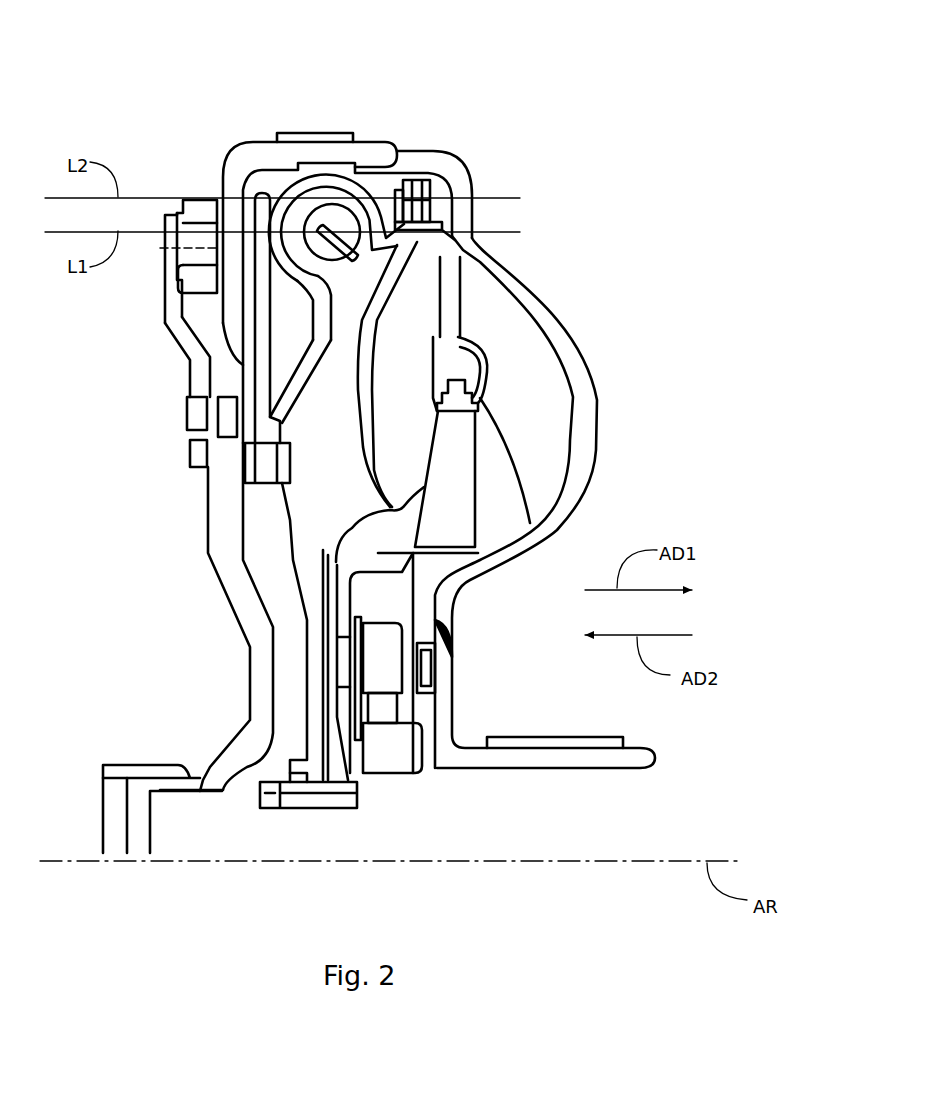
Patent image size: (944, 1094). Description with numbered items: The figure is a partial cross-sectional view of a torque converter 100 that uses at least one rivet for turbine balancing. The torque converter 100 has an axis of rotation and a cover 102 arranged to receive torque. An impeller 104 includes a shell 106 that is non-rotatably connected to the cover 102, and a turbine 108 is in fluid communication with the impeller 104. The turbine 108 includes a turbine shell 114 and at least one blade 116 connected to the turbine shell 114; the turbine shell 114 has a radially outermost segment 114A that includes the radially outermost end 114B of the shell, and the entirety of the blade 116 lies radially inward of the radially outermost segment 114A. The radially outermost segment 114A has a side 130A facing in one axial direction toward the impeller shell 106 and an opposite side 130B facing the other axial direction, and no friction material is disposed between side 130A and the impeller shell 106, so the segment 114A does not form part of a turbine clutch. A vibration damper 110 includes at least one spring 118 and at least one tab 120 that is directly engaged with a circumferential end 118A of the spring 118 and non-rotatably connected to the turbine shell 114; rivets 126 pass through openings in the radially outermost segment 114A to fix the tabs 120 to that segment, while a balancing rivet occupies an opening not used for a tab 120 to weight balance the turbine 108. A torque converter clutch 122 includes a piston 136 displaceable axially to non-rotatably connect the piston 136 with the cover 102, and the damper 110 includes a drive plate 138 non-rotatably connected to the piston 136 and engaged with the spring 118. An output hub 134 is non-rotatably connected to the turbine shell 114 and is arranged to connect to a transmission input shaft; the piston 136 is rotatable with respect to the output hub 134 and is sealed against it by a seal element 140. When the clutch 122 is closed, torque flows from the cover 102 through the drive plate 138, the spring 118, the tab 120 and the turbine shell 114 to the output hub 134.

The torque converter 100 is at (614, 82).
The cover 102 is at (238, 176).
The impeller 104 is at (545, 283).
The shell 106 is at (568, 332).
The turbine 108 is at (338, 500).
The vibration damper 110 is at (298, 320).
The turbine shell 114 is at (360, 447).
The radially outermost segment 114A is at (463, 232).
The radially outermost end 114B is at (416, 183).
The blade 116 is at (396, 379).
The spring 118 is at (316, 185).
The circumferential end 118A is at (303, 212).
The tab 120 is at (377, 213).
The torque converter clutch 122 is at (236, 182).
The rivet 126 is at (420, 205).
The side 130A is at (423, 188).
The side 130B is at (388, 218).
The output hub 134 is at (313, 790).
The piston 136 is at (293, 580).
The drive plate 138 is at (280, 283).
The seal element 140 is at (300, 783).